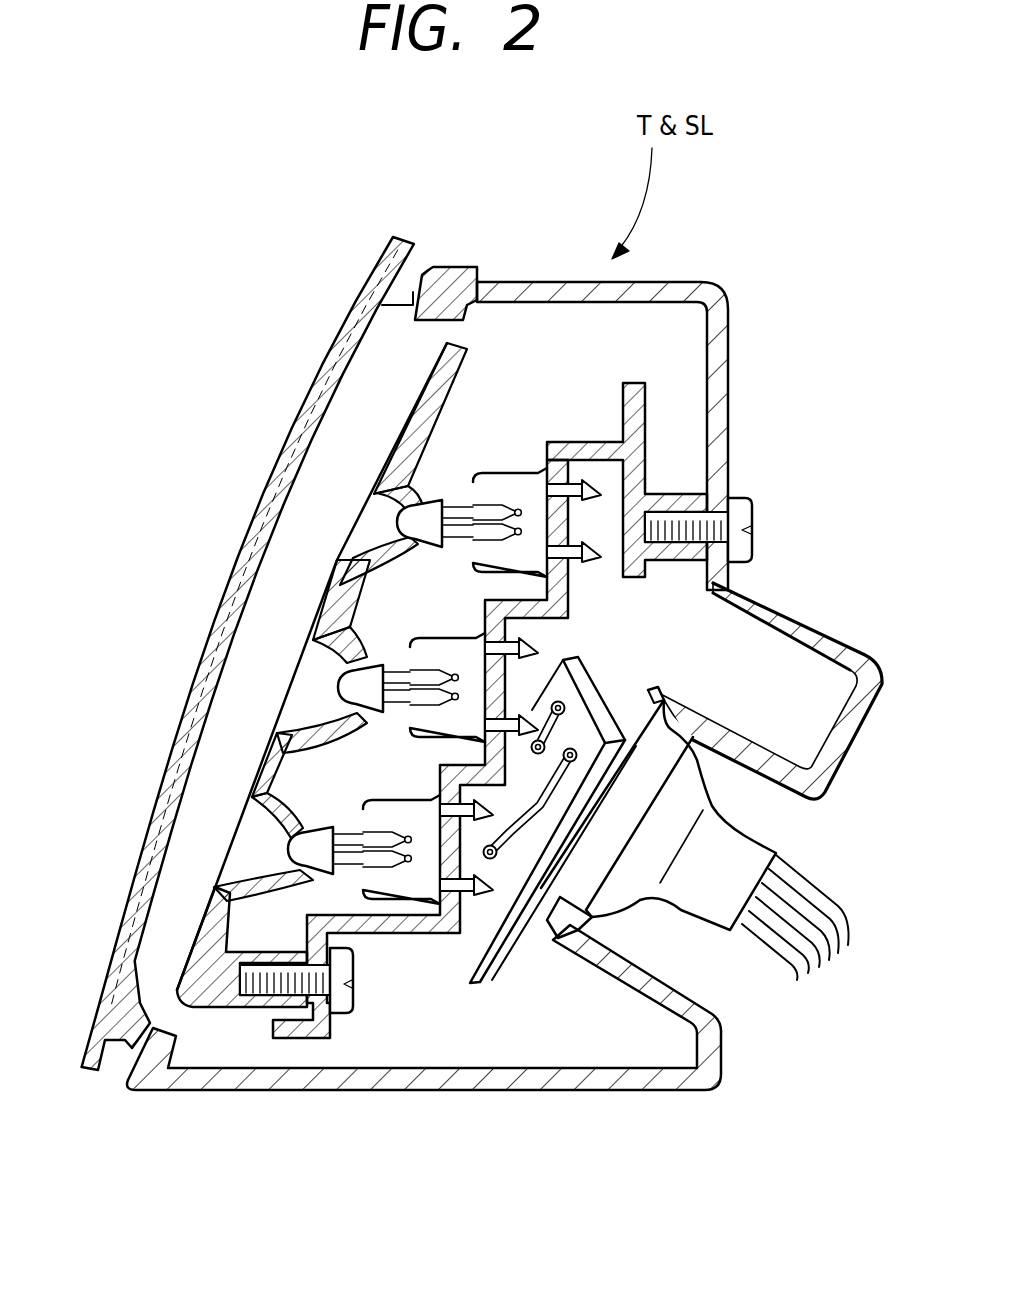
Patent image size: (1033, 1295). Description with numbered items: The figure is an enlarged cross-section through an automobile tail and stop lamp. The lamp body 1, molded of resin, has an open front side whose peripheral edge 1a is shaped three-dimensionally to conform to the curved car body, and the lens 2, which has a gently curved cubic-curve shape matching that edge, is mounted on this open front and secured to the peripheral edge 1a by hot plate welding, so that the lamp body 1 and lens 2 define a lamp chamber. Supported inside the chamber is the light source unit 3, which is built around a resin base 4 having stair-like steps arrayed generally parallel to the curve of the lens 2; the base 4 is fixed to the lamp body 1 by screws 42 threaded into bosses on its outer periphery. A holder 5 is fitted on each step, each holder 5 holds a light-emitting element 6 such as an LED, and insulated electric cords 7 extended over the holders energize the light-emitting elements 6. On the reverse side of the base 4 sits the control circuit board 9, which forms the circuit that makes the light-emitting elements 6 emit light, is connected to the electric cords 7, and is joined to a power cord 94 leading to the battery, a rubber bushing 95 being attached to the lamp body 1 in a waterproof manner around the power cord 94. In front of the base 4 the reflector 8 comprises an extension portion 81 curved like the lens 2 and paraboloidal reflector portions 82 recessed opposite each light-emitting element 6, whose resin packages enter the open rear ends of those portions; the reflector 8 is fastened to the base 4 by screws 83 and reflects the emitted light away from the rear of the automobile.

The lamp body 1 is at (722, 387).
The peripheral edge 1a is at (441, 268).
The lens 2 is at (310, 396).
The light source unit 3 is at (372, 1022).
The base 4 is at (638, 452).
The screw 42 is at (677, 542).
The holder 5 is at (510, 478).
The light-emitting element 6 is at (337, 692).
The electric cord 7 is at (401, 897).
The reflector 8 is at (208, 998).
The extension portion 81 is at (330, 590).
The reflector portion 82 is at (393, 503).
The screw 83 is at (250, 1000).
The control circuit board 9 is at (592, 690).
The power cord 94 is at (798, 925).
The rubber bushing 95 is at (754, 848).